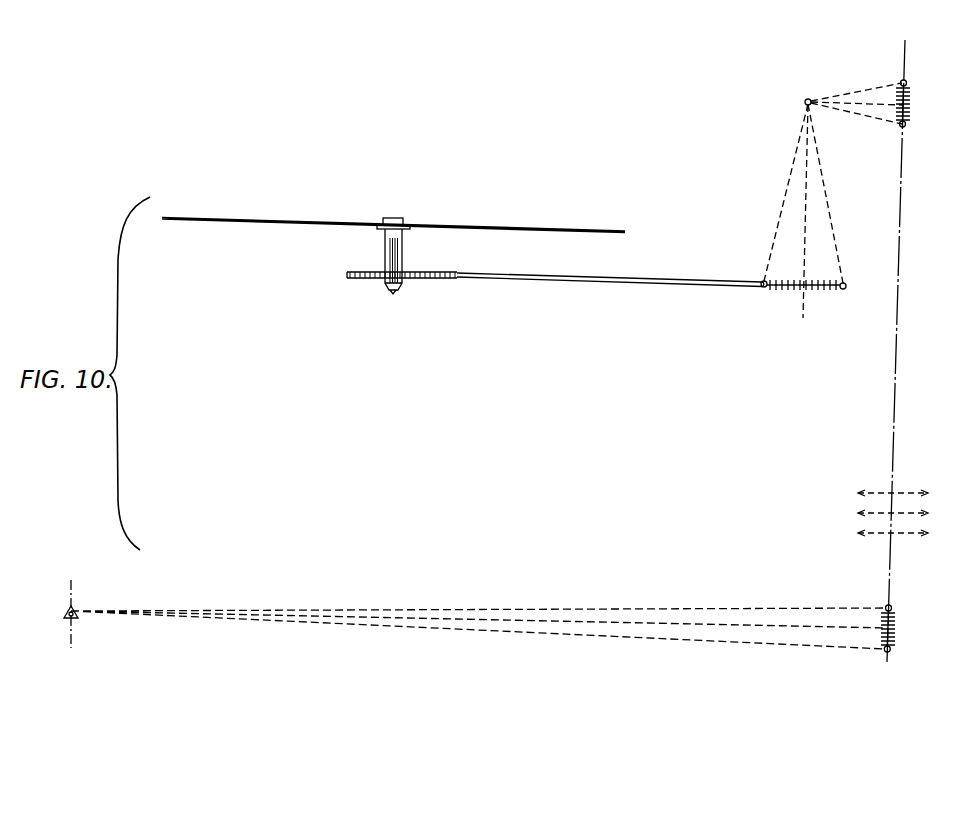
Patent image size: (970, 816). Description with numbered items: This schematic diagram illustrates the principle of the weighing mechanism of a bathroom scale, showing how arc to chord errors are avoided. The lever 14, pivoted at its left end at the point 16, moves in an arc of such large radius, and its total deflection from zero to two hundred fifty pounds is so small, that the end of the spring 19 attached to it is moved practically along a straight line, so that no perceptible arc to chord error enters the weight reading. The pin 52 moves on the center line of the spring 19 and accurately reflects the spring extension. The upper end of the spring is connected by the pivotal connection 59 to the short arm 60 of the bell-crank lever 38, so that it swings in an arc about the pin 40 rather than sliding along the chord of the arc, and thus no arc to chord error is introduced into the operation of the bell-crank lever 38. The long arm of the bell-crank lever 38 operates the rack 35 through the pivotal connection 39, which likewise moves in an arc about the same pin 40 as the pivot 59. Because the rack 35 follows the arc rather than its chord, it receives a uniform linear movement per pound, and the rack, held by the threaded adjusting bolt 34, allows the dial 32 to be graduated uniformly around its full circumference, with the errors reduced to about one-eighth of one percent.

The lever 14 is at (412, 617).
The pivot 16 is at (66, 621).
The spring 19 is at (856, 513).
The dial 32 is at (493, 225).
The adjusting bolt 34 is at (403, 256).
The rack 35 is at (453, 279).
The bell-crank lever 38 is at (773, 220).
The pivotal connection 39 is at (762, 281).
The pin 40 is at (805, 101).
The pin 52 is at (897, 395).
The pivotal connection 59 is at (899, 127).
The short arm 60 is at (862, 117).